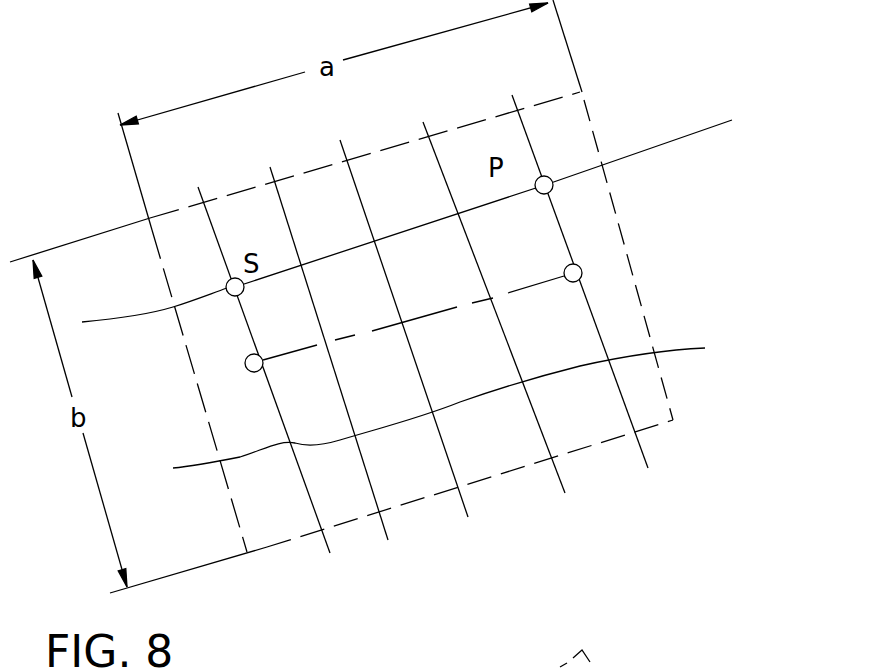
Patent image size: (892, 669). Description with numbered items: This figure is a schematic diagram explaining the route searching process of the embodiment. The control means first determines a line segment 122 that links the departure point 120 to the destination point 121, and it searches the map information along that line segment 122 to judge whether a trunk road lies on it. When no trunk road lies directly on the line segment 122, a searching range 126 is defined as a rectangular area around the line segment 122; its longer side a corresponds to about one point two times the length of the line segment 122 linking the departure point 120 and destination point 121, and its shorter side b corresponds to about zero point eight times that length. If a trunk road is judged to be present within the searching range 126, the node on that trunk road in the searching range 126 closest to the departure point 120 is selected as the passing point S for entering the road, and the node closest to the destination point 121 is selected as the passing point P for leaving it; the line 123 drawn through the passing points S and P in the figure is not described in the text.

The departure point 120 is at (245, 370).
The destination point 121 is at (568, 282).
The line segment 122 is at (372, 332).
The straight line between S and P 123 is at (610, 163).
The searching range 126 is at (675, 420).